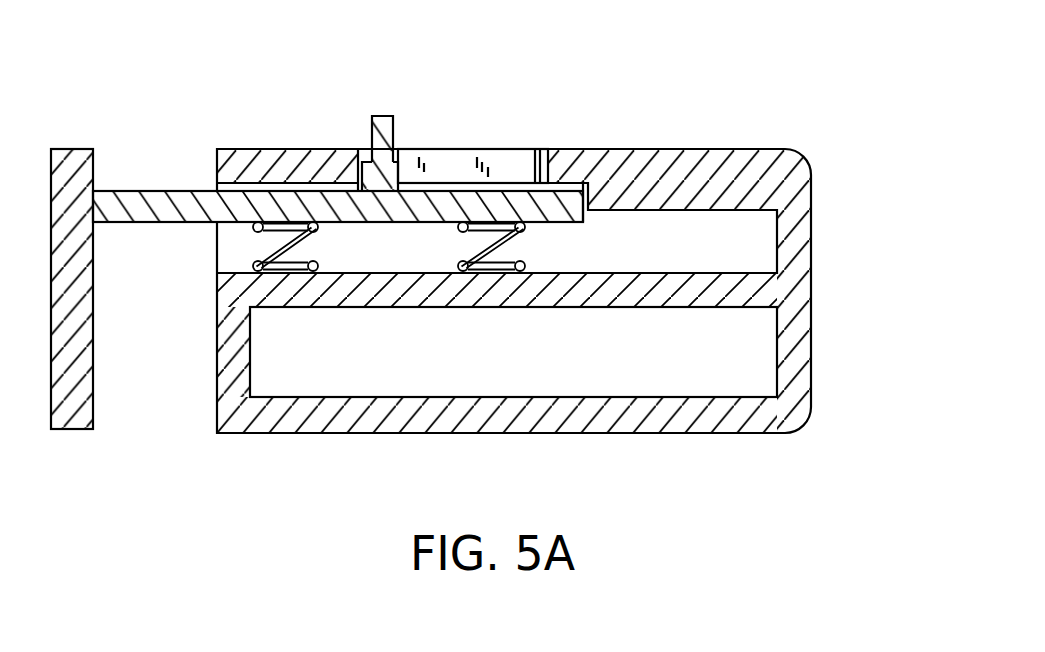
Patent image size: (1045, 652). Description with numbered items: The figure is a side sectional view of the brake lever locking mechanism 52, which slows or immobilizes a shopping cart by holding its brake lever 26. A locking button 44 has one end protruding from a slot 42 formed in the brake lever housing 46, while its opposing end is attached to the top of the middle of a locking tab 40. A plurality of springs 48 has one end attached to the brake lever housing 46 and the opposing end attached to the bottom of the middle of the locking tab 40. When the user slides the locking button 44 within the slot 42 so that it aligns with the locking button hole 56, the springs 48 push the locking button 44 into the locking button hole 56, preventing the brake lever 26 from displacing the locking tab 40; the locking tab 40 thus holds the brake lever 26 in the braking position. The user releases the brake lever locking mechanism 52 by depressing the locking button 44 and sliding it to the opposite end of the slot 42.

The brake lever 26 is at (70, 430).
The locking tab 40 is at (139, 191).
The slot 42 is at (488, 147).
The locking button 44 is at (383, 116).
The brake lever housing 46 is at (811, 300).
The springs 48 is at (300, 247).
The brake lever locking mechanism 52 is at (177, 223).
The locking button hole 56 is at (400, 147).